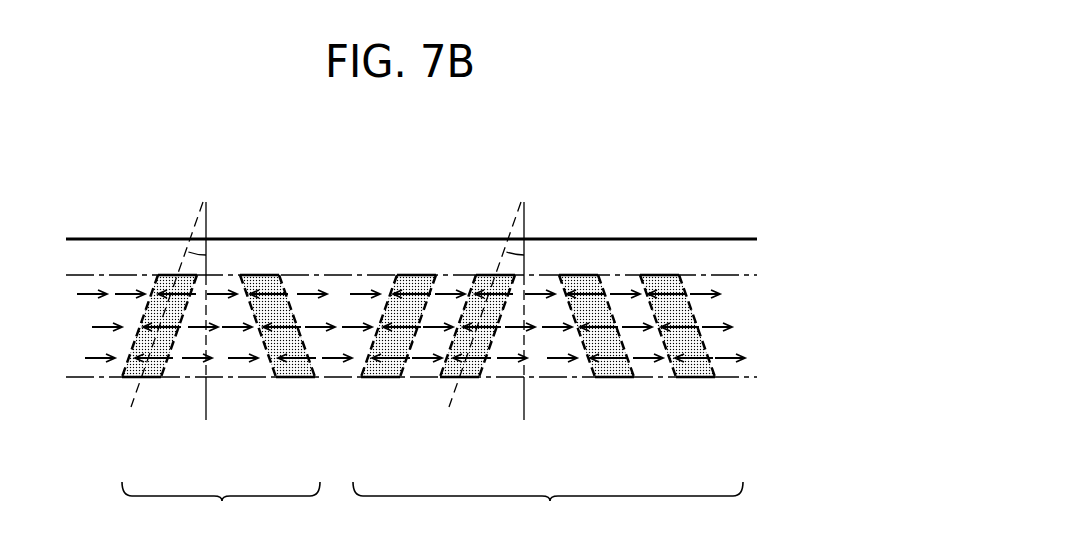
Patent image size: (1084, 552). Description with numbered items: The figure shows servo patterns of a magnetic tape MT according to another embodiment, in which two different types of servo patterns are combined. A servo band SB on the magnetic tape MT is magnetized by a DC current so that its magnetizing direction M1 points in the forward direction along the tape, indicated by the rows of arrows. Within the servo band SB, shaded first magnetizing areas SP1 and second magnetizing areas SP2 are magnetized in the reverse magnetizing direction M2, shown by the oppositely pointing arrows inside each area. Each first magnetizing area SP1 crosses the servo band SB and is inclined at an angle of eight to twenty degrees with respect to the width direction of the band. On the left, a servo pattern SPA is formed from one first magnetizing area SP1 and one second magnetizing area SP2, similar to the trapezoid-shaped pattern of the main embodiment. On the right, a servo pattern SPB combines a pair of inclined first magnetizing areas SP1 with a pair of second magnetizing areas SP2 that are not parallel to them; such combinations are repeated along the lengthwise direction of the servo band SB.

The magnetizing direction M1 is at (352, 294).
The magnetizing direction M2 is at (269, 292).
The magnetic tape MT is at (586, 239).
The servo band SB is at (651, 275).
The first magnetizing area SP1 is at (155, 372).
The second magnetizing area SP2 is at (291, 372).
The servo pattern SPA is at (221, 512).
The servo pattern SPB is at (548, 512).